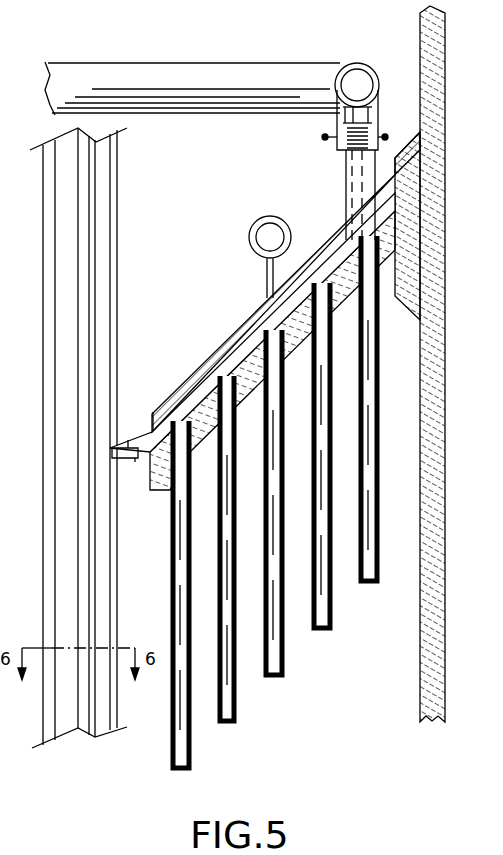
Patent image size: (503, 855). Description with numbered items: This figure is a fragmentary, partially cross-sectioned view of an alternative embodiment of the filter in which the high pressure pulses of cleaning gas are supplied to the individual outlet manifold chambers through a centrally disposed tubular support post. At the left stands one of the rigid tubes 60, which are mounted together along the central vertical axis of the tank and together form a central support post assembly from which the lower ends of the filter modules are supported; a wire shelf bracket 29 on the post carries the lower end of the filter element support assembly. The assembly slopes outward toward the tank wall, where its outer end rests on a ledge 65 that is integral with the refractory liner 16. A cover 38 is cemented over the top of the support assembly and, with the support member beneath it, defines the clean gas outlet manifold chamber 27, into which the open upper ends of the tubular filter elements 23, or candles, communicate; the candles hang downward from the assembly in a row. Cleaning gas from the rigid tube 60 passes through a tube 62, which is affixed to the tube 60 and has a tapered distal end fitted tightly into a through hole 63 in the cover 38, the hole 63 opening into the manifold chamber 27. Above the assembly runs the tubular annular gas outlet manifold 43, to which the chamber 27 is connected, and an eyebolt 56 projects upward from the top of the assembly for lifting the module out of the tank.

The refractory liner 16 is at (433, 458).
The tubular filter element 23 is at (192, 738).
The clean gas outlet manifold chamber 27 is at (259, 318).
The wire shelf bracket 29 is at (135, 462).
The cover 38 is at (258, 292).
The tubular annular gas outlet manifold 43 is at (208, 86).
The eyebolt 56 is at (268, 215).
The rigid tube 60 is at (118, 604).
The tube 62 is at (128, 436).
The through hole 63 is at (153, 412).
The ledge 65 is at (421, 197).